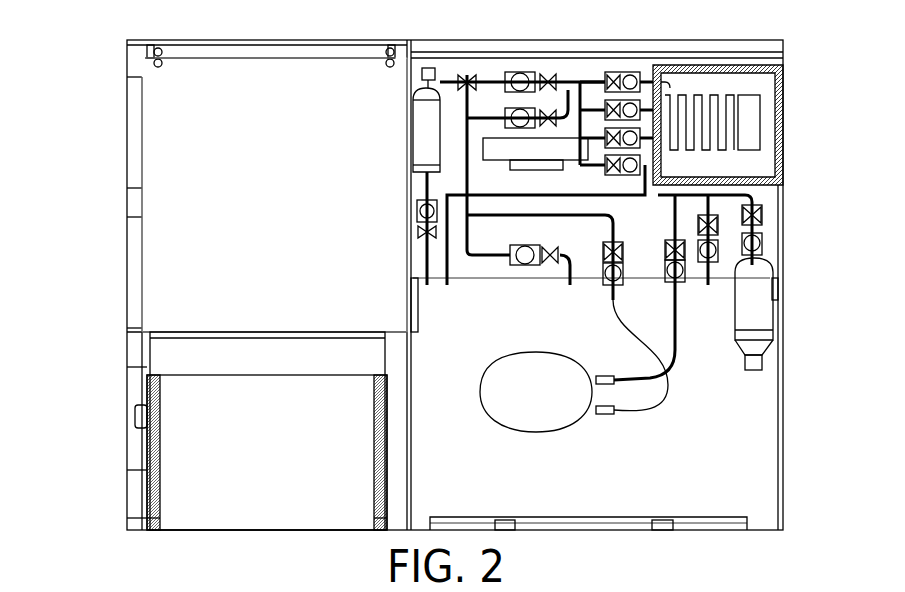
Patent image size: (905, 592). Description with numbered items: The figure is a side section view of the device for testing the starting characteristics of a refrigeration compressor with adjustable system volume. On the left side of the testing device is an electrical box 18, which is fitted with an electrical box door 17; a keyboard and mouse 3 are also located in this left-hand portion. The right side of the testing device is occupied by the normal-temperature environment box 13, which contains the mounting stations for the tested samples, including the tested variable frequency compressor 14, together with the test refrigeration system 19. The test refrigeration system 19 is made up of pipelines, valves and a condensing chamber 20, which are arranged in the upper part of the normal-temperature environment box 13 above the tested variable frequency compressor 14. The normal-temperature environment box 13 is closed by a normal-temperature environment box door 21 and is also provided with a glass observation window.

The keyboard and mouse 3 is at (185, 480).
The normal-temperature environment box 13 is at (765, 402).
The tested variable frequency compressor 14 is at (552, 392).
The electrical box door 17 is at (132, 277).
The electrical box 18 is at (197, 165).
The test refrigeration system 19 is at (588, 82).
The condensing chamber 20 is at (770, 118).
The normal-temperature environment box door 21 is at (700, 527).